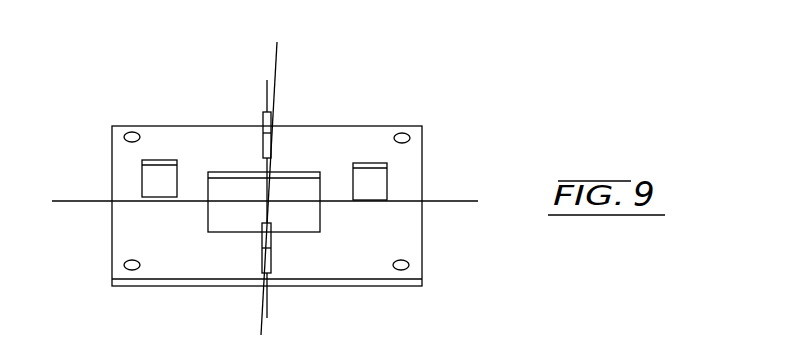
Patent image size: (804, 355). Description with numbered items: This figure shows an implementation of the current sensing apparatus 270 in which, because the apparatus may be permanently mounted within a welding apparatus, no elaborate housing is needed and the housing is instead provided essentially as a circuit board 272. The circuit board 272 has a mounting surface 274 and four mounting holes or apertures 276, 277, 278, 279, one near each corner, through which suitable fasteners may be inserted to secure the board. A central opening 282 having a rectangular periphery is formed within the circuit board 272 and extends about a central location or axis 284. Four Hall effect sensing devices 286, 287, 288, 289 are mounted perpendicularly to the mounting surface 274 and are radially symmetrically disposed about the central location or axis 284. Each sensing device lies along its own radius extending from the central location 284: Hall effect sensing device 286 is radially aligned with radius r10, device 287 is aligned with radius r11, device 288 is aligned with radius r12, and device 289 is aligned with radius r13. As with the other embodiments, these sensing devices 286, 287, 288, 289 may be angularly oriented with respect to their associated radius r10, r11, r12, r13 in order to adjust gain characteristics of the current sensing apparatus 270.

The apparatus 270 is at (466, 31).
The circuit board 272 is at (428, 182).
The mounting surface 274 is at (395, 228).
The mounting hole 276 is at (132, 131).
The mounting hole 277 is at (403, 132).
The mounting hole 278 is at (410, 265).
The mounting hole 279 is at (124, 265).
The central opening 282 is at (291, 192).
The central location or axis 284 is at (274, 54).
The Hall effect sensing device 286 is at (368, 162).
The Hall effect sensing device 287 is at (263, 114).
The Hall effect sensing device 288 is at (142, 172).
The Hall effect sensing device 289 is at (272, 254).
The radius r10 is at (437, 200).
The radius r11 is at (266, 110).
The radius r12 is at (93, 202).
The radius r13 is at (268, 298).